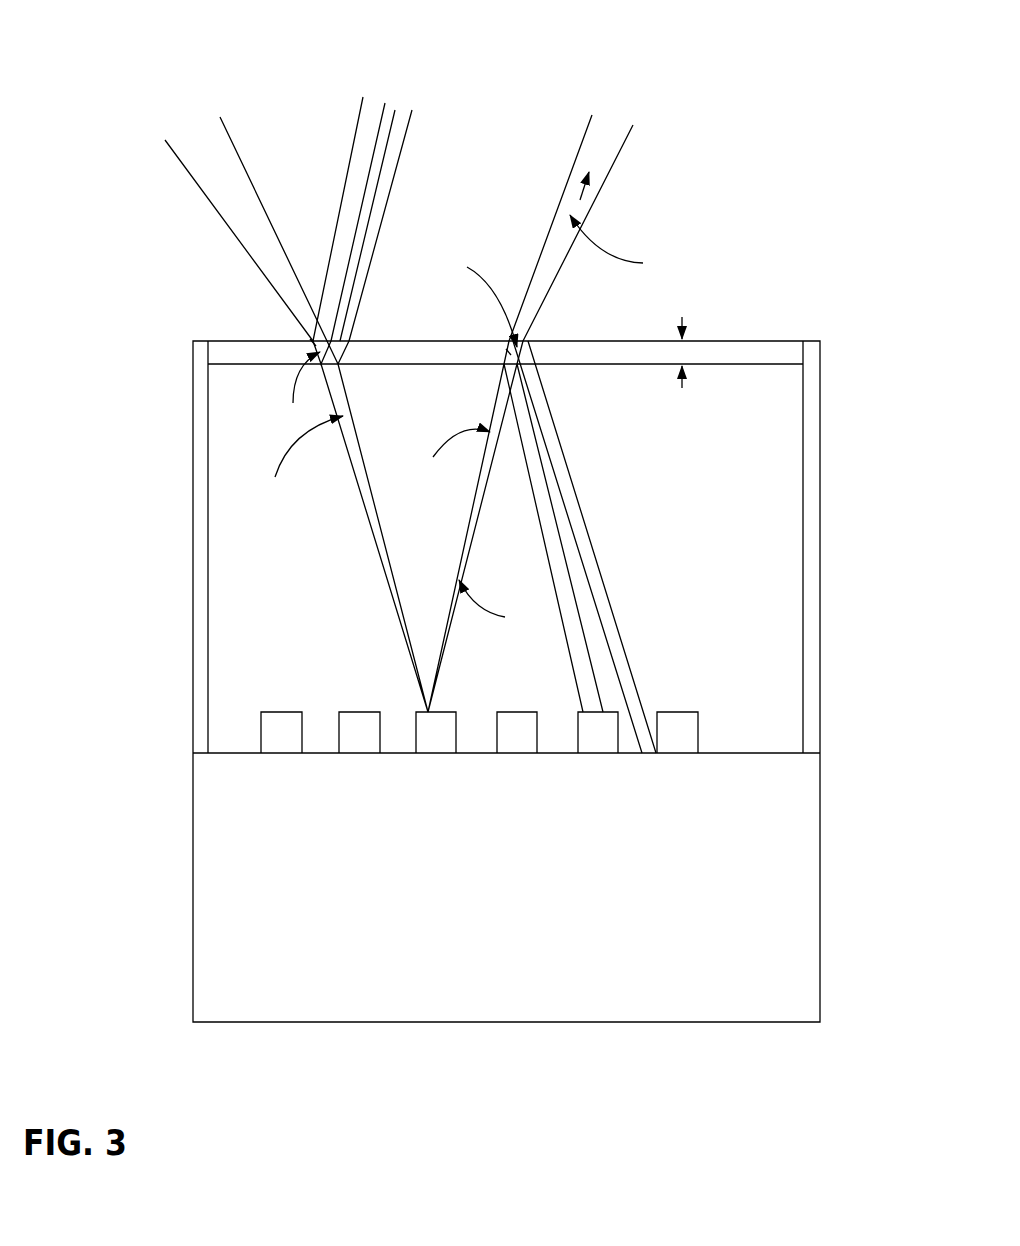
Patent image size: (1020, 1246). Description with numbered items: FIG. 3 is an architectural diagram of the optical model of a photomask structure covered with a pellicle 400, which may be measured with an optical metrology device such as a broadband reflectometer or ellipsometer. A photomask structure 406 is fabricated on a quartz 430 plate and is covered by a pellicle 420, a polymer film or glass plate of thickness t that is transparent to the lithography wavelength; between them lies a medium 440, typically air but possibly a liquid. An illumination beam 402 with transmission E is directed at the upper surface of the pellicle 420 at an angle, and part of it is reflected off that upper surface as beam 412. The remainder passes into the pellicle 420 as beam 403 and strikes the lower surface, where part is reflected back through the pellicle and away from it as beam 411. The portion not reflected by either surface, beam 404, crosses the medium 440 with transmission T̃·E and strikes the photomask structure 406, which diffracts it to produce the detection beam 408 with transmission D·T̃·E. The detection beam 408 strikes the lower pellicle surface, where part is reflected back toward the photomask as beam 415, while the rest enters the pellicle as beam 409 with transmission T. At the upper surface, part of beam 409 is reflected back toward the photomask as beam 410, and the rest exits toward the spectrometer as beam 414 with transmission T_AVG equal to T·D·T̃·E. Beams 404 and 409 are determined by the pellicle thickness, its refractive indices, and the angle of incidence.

The photomask structure covered with a pellicle 400 is at (512, 72).
The illumination beam 402 is at (205, 160).
The beam passing through the pellicle 403 is at (316, 346).
The illumination beam through the medium 404 is at (337, 532).
The photomask structure 406 is at (250, 728).
The detection beam 408 is at (454, 526).
The detection beam through the pellicle 409 is at (502, 353).
The reflected detection beam from upper surface 410 is at (582, 525).
The beam reflected from lower pellicle surface 411 is at (377, 217).
The beam reflected from upper pellicle surface 412 is at (358, 148).
The detection beam to detector 414 is at (653, 223).
The detection beam reflected from lower pellicle surface 415 is at (573, 663).
The pellicle 420 is at (788, 354).
The quartz plate 430 is at (506, 803).
The medium 440 is at (505, 547).